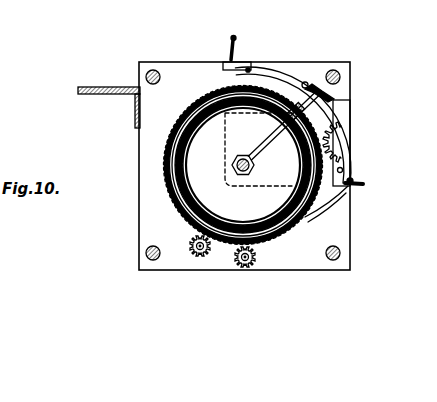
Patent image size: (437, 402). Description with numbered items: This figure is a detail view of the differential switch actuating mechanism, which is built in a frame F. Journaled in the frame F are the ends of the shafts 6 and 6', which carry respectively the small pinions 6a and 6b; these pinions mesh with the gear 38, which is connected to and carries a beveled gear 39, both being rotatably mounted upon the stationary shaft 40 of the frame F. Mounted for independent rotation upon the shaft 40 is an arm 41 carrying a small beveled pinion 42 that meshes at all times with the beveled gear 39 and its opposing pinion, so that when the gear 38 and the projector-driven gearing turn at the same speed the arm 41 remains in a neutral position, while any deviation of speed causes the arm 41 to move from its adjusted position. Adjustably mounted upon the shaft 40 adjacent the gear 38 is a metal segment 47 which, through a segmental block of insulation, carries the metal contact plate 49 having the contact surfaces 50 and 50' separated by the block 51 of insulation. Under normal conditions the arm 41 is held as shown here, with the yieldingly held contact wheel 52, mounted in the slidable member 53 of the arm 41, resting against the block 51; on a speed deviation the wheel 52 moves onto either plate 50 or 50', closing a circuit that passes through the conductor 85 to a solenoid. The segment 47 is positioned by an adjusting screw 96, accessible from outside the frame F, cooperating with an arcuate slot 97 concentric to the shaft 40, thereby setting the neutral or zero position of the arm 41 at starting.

The shaft 6 is at (200, 269).
The small pinion 6a is at (196, 251).
The small pinion 6b is at (244, 268).
The shaft 6' is at (274, 246).
The gear 38 is at (182, 211).
The beveled gear 39 is at (178, 176).
The stationary shaft 40 is at (257, 165).
The arm 41 is at (265, 140).
The small beveled pinion 42 is at (300, 108).
The segment 47 is at (228, 87).
The metal contact plate 49 is at (258, 68).
The contact surface 50 is at (290, 100).
The contact surface 50' is at (363, 132).
The block of insulation 51 is at (343, 103).
The contact wheel 52 is at (322, 92).
The slidable member 53 is at (352, 102).
The frame F is at (345, 100).
The conductor 85 is at (363, 182).
The adjusting screw 96 is at (336, 140).
The arcuate slot 97 is at (330, 201).